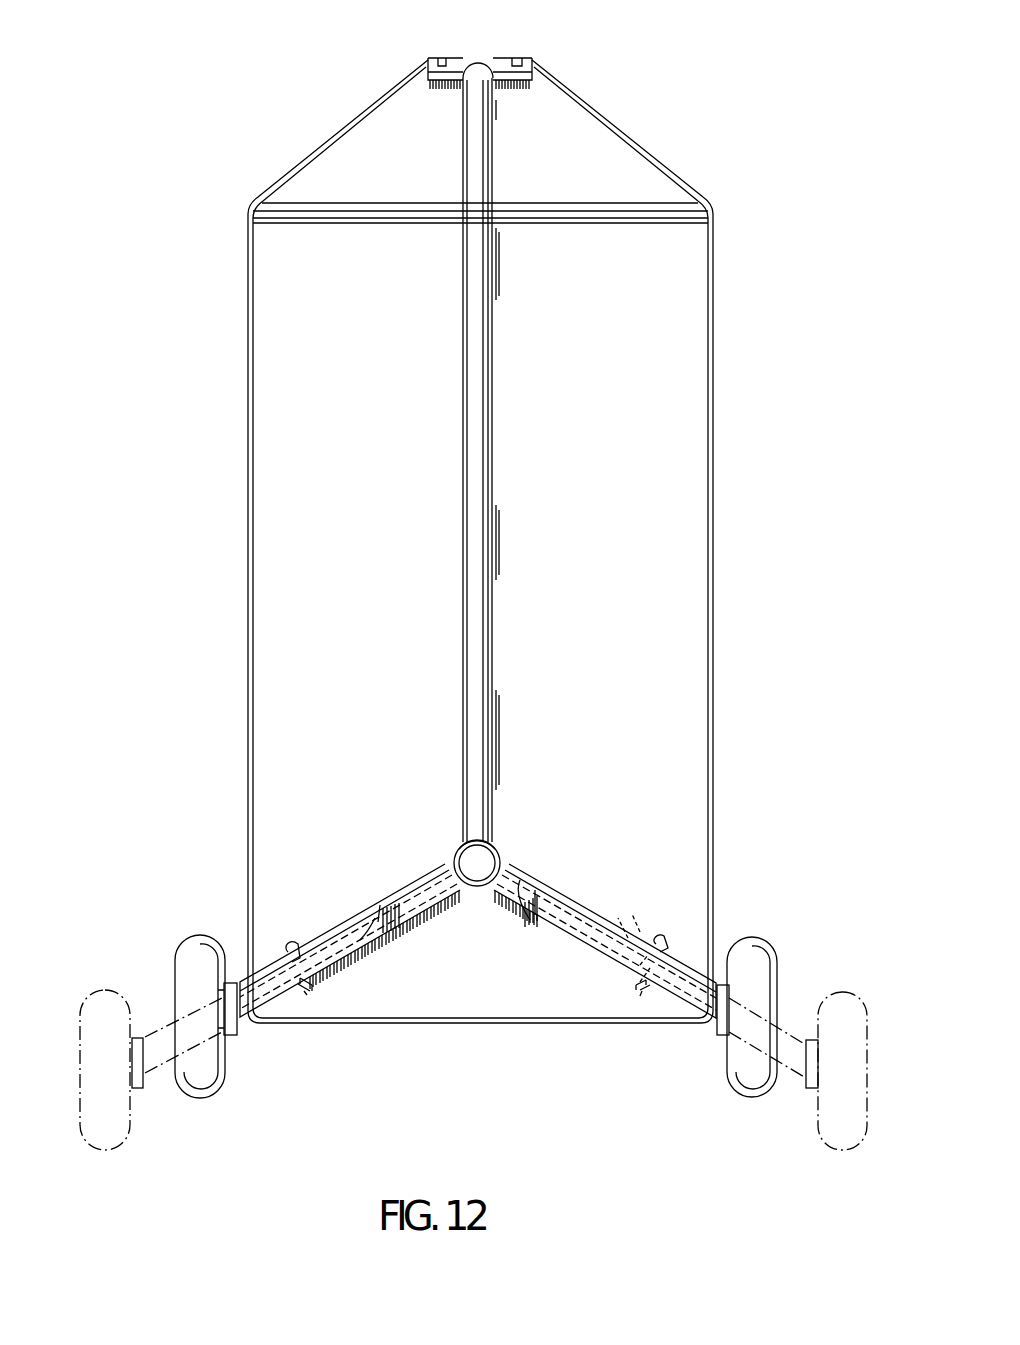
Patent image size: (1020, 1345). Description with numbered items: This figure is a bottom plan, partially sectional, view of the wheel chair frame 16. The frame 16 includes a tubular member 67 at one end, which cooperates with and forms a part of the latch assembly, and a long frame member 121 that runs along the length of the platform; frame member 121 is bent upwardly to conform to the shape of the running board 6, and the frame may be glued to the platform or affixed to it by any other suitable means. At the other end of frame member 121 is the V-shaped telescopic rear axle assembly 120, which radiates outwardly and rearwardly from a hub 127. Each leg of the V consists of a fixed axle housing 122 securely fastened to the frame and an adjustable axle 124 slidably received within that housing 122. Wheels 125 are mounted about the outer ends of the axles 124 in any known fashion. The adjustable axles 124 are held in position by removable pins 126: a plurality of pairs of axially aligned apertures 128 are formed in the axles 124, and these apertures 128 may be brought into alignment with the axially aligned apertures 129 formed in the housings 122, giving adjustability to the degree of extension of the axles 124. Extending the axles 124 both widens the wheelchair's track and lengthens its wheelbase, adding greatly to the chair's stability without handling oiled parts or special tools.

The running board 6 is at (648, 157).
The tubular member 67 is at (510, 58).
The wheel chair frame 16 is at (478, 540).
The frame member 121 is at (494, 704).
The telescopic rear axle assembly 120 is at (511, 846).
The hub 127 is at (452, 852).
The fixed axle housings 122 is at (509, 900).
The adjustable axles 124 is at (378, 918).
The axially aligned apertures 128 is at (640, 928).
The removable pins 126 is at (660, 940).
The axially aligned apertures 129 is at (668, 958).
The wheels 125 is at (197, 934).